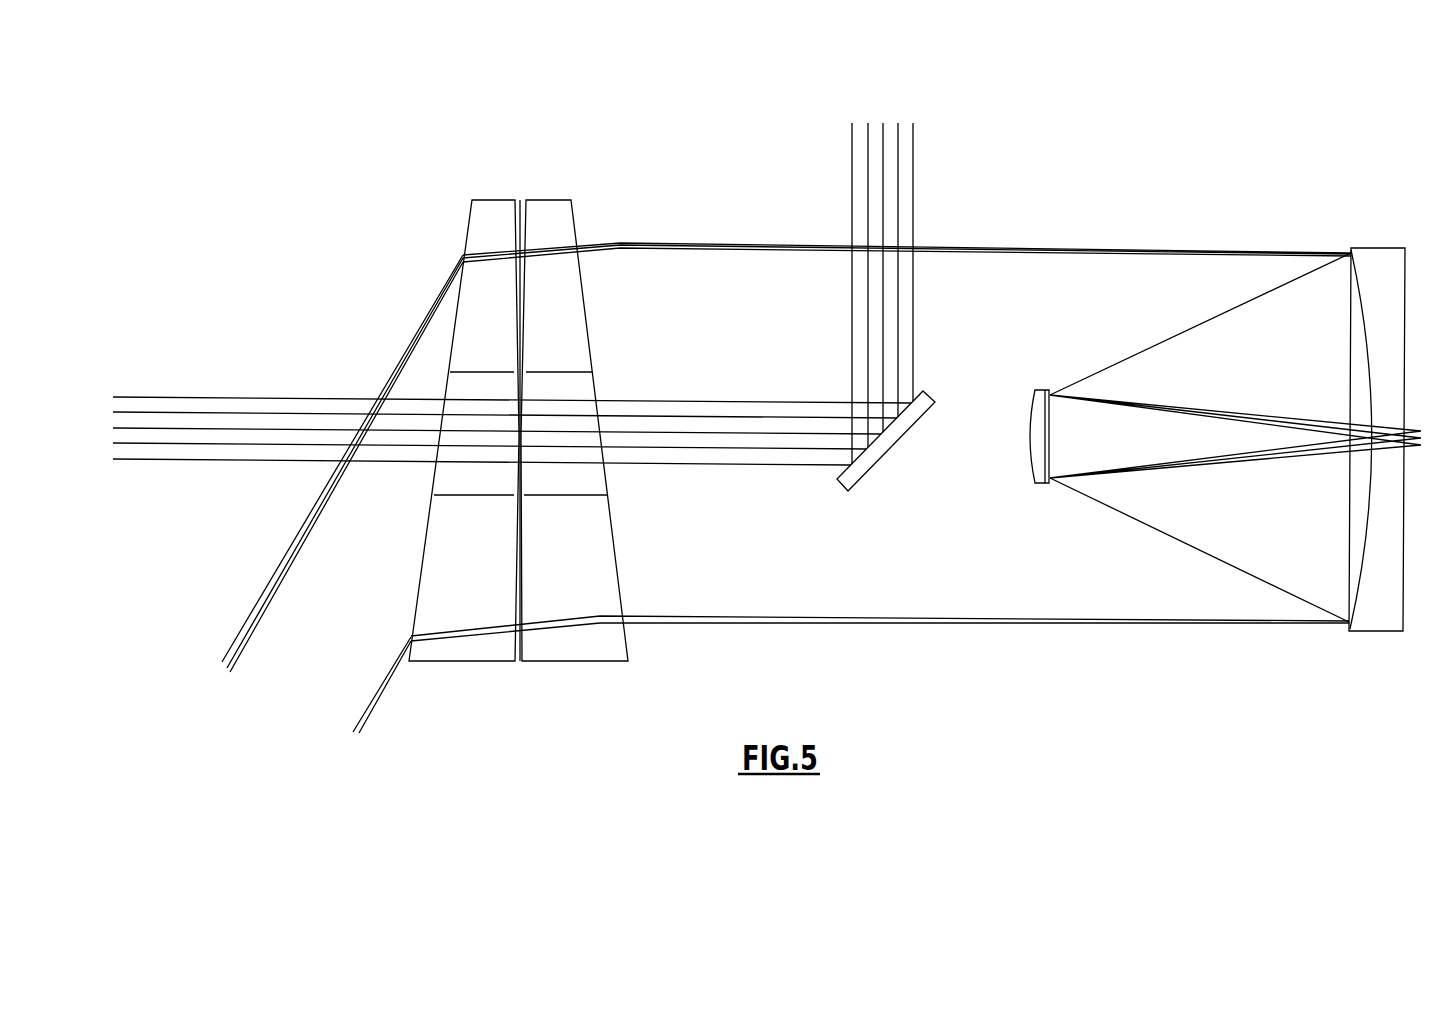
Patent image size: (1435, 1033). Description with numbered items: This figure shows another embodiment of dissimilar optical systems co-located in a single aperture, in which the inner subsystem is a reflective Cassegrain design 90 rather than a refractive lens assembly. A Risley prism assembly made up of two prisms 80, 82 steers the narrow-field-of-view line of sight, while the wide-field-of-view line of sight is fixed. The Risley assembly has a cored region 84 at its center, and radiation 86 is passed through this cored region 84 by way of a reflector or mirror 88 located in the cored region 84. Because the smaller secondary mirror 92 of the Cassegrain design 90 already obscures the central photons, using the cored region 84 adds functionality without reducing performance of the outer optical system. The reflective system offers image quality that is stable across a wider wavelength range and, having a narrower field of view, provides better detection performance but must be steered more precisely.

The Risley prism 80 is at (486, 576).
The Risley prism 82 is at (576, 576).
The cored region 84 is at (476, 430).
The radiation 86 is at (879, 108).
The reflector or mirror 88 is at (892, 447).
The Cassegrain design 90 is at (1193, 281).
The secondary mirror 92 is at (1038, 377).